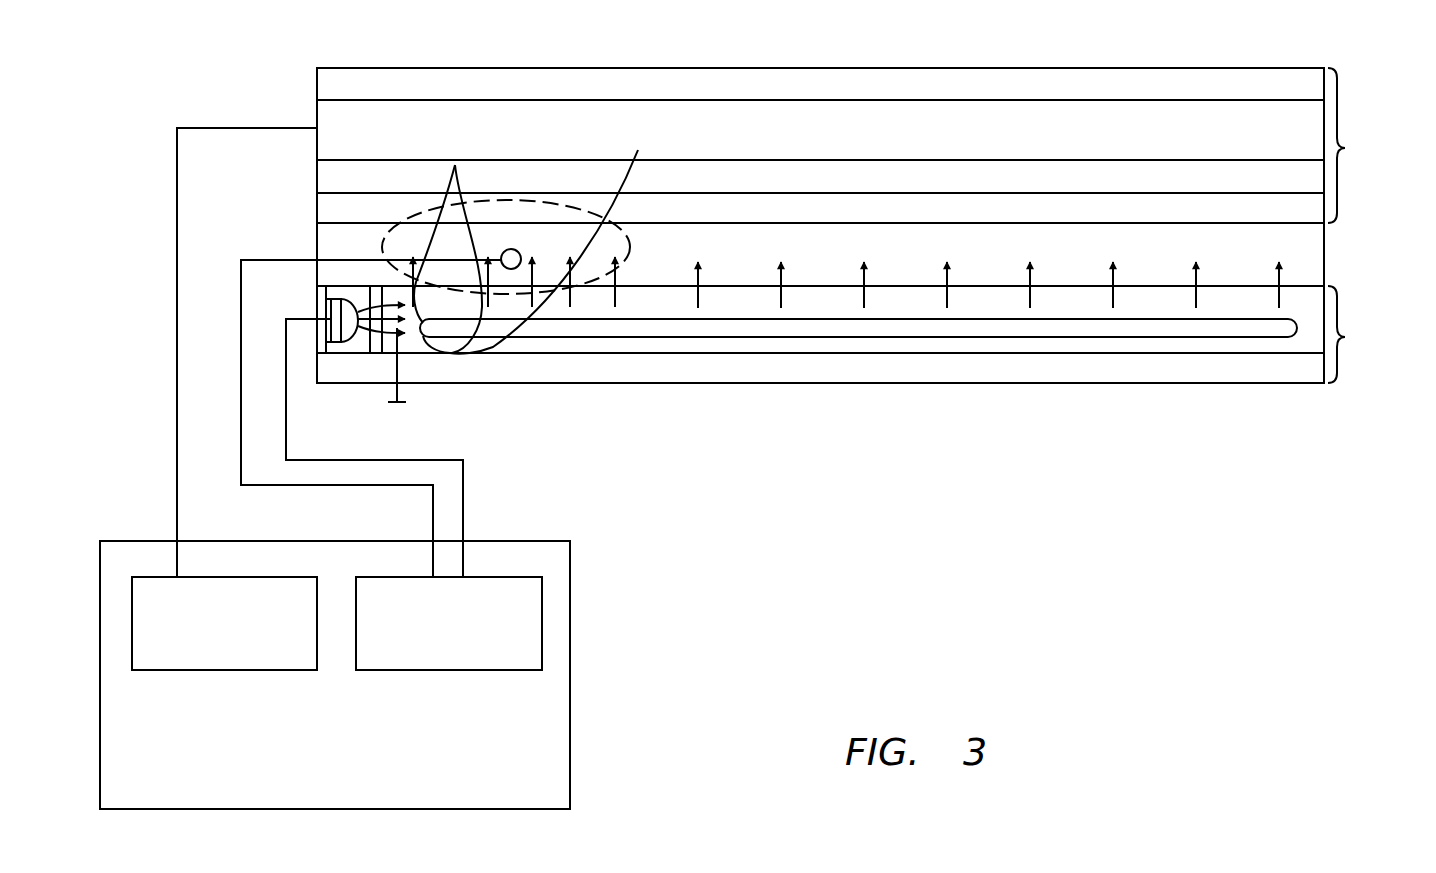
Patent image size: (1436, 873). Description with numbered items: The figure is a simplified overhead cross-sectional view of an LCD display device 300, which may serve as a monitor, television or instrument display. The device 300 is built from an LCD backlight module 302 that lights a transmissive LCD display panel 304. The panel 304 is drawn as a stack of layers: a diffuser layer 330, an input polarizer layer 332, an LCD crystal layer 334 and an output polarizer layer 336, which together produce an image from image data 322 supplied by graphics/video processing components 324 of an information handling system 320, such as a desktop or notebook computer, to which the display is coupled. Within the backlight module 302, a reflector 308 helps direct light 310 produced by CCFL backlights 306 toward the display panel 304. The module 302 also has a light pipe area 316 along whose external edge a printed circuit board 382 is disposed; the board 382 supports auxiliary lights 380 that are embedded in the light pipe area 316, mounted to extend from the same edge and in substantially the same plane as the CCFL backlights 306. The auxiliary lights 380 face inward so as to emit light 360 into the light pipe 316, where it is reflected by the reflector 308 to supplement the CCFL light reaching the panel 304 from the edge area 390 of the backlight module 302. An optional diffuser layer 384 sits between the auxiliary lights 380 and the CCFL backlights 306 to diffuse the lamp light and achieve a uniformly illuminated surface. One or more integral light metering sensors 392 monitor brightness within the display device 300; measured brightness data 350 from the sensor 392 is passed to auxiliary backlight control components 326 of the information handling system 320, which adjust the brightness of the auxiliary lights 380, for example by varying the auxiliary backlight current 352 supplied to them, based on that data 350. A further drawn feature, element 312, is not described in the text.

The LCD display device 300 is at (405, 67).
The LCD backlight module 302 is at (1345, 337).
The transmissive LCD display panel 304 is at (1345, 148).
The CCFL backlight 306 is at (1133, 328).
The reflector 308 is at (1238, 375).
The light 310 is at (533, 283).
The light guide 312 is at (406, 400).
The light pipe area 316 is at (348, 292).
The information handling system 320 is at (313, 787).
The image data 322 is at (177, 193).
The graphics/video processing component 324 is at (253, 670).
The auxiliary backlight control component 326 is at (472, 670).
The diffuser layer 330 is at (800, 222).
The input polarizer layer 332 is at (800, 190).
The LCD crystal layer 334 is at (800, 144).
The output polarizer layer 336 is at (800, 97).
The measured brightness data 350 is at (432, 502).
The auxiliary backlight current 352 is at (465, 512).
The light 360 is at (455, 165).
The auxiliary light 380 is at (337, 338).
The printed circuit board 382 is at (321, 308).
The diffuser layer 384 is at (375, 347).
The edge area 390 is at (405, 222).
The light metering sensor 392 is at (512, 248).